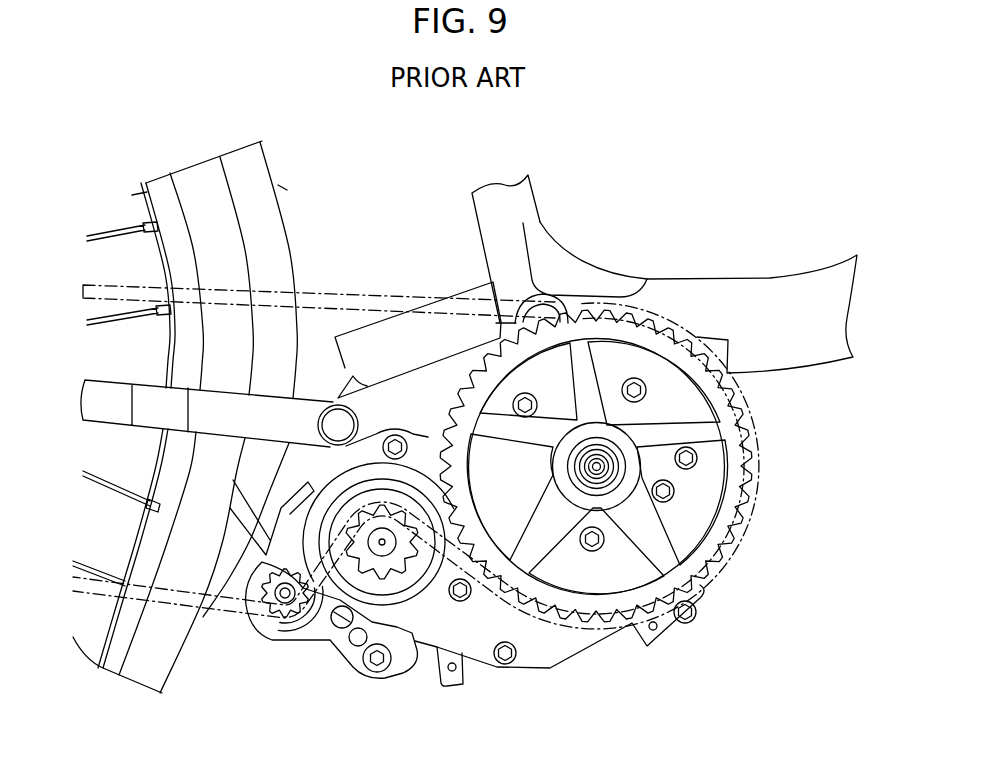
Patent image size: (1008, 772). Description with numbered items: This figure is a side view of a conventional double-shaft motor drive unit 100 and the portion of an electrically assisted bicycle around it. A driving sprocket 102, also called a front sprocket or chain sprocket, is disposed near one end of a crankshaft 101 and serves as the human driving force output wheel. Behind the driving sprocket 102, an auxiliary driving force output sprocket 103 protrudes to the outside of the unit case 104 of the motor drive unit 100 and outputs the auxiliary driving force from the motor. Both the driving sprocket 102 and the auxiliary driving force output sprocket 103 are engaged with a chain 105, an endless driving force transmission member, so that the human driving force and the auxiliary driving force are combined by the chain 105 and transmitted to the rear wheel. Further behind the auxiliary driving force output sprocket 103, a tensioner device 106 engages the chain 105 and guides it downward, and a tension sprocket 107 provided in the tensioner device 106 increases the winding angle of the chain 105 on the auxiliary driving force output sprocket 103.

The double-shaft motor drive unit 100 is at (605, 678).
The crankshaft 101 is at (596, 448).
The driving sprocket 102 is at (750, 388).
The auxiliary driving force output sprocket 103 is at (430, 560).
The unit case 104 is at (532, 645).
The chain 105 is at (213, 620).
The tensioner device 106 is at (277, 650).
The tension sprocket 107 is at (237, 603).